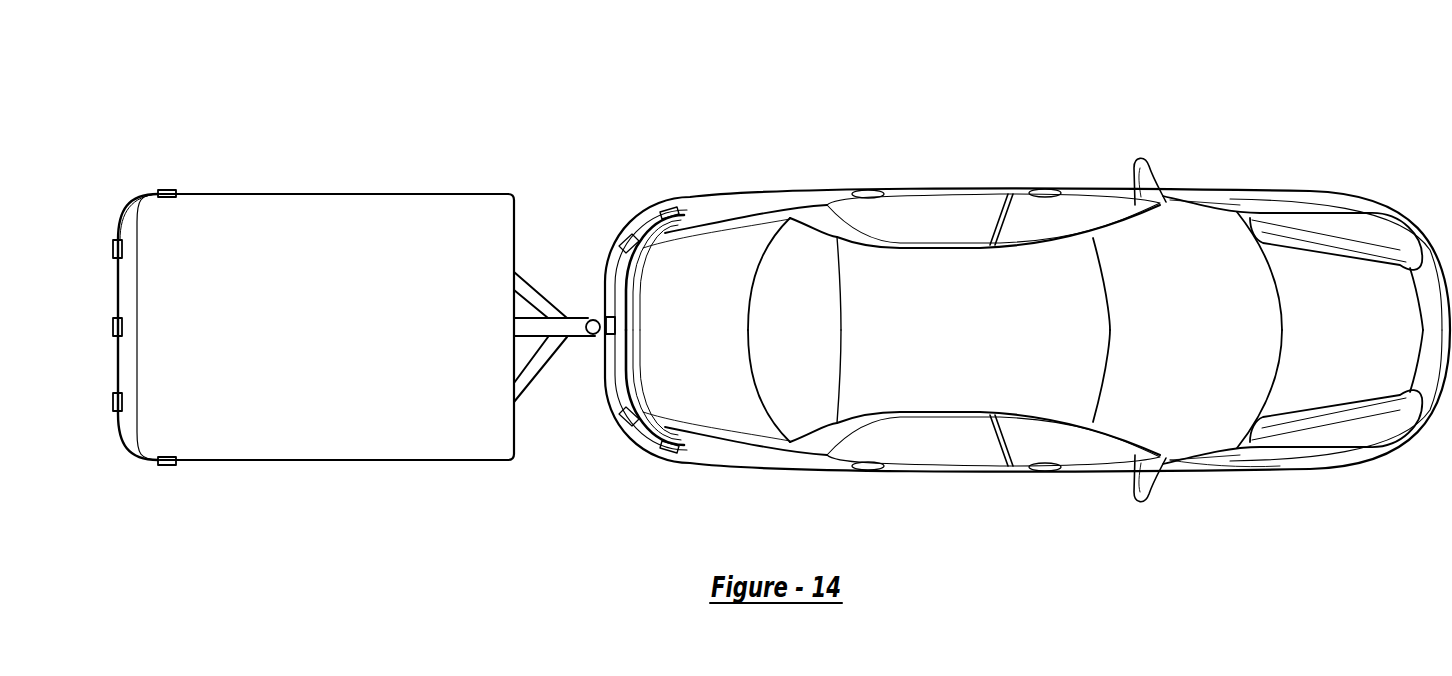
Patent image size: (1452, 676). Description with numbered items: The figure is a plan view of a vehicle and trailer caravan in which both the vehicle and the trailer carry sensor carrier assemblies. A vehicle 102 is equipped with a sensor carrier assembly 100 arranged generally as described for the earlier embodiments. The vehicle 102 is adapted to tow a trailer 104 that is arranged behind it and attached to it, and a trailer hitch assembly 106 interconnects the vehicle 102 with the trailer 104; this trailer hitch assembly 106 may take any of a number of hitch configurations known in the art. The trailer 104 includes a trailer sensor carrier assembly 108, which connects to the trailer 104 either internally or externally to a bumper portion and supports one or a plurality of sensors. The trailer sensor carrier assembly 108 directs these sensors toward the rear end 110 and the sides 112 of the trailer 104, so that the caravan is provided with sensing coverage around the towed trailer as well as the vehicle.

The sensor carrier assembly 100 is at (618, 206).
The vehicle 102 is at (1217, 465).
The trailer 104 is at (309, 194).
The trailer hitch assembly 106 is at (536, 372).
The trailer sensor carrier assembly 108 is at (146, 236).
The rear end 110 is at (120, 326).
The sides 112 is at (200, 459).